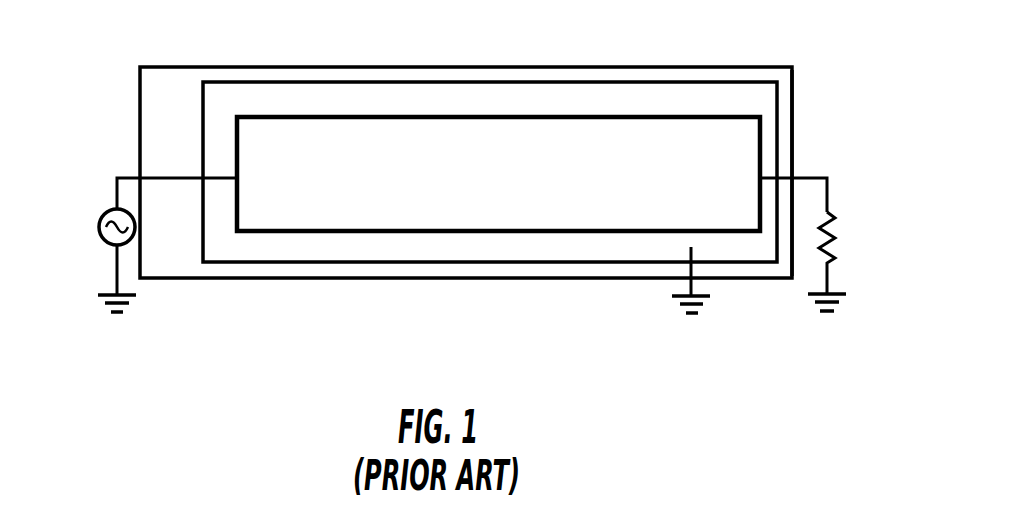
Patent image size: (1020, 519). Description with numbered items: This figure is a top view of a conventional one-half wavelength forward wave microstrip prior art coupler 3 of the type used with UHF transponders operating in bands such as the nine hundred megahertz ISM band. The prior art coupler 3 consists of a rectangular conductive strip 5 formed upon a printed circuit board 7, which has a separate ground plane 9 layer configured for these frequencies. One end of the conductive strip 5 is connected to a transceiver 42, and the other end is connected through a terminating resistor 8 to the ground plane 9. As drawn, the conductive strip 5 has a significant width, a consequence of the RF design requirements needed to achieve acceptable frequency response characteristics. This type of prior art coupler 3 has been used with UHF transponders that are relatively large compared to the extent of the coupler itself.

The prior art coupler 3 is at (318, 66).
The conductive strip 5 is at (453, 143).
The printed circuit board 7 is at (794, 84).
The terminating resistor 8 is at (835, 261).
The ground plane 9 is at (668, 97).
The transceiver 42 is at (100, 213).